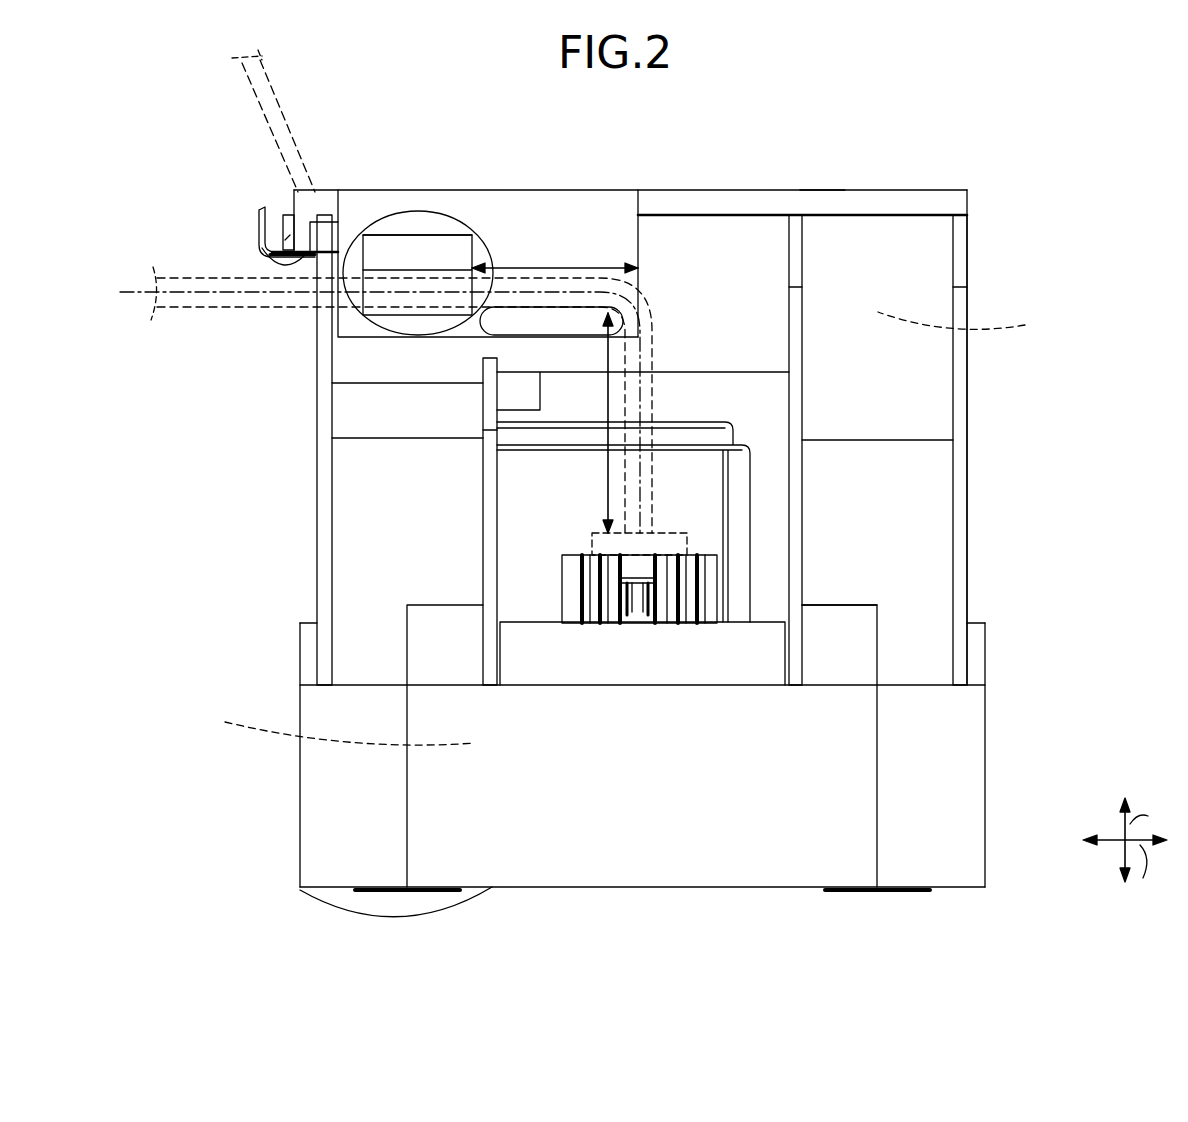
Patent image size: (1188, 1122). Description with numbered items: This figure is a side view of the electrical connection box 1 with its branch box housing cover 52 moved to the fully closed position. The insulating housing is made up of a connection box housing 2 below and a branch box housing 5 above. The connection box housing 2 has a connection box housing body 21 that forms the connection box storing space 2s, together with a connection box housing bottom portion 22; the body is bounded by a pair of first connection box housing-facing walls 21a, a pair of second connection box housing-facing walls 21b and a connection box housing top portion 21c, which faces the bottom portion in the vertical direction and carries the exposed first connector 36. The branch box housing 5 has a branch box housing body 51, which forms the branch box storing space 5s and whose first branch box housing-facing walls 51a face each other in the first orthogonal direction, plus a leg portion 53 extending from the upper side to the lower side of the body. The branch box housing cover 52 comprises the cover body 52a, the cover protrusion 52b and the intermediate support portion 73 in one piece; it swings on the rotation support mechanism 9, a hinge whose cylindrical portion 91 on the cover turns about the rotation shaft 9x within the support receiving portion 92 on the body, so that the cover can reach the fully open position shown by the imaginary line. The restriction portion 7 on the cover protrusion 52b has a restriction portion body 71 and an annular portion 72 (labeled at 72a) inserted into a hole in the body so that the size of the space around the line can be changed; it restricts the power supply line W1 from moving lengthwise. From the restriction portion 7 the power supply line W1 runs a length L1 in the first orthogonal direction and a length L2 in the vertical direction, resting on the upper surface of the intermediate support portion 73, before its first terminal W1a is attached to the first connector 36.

The electrical connection box 1 is at (968, 125).
The connection box housing 2 is at (135, 795).
The connection box storing space 2s is at (335, 728).
The branch box housing 5 is at (1108, 195).
The branch box storing space 5s is at (964, 326).
The restriction portion 7 is at (505, 128).
The rotation support mechanism 9 is at (148, 160).
The rotation shaft 9x is at (263, 262).
The connection box housing body 21 is at (452, 800).
The first connection box housing-facing walls 21a is at (300, 780).
The second connection box housing-facing walls 21b is at (727, 862).
The connection box housing top portion 21c is at (768, 620).
The connection box housing bottom portion 22 is at (300, 890).
The first connector 36 is at (572, 593).
The branch box housing body 51 is at (920, 267).
The first branch box housing-facing walls 51a is at (740, 245).
The branch box housing cover 52 is at (928, 200).
The cover body 52a is at (276, 88).
The cover protrusion 52b is at (603, 217).
The leg portion 53 is at (365, 490).
The restriction portion body 71 is at (487, 250).
The annular portion 72 is at (413, 290).
The holding block upper face 72a is at (388, 235).
The intermediate support portion 73 is at (572, 323).
The cylindrical portion 91 is at (283, 222).
The support receiving portion 92 is at (258, 232).
The length of power supply line in first orthogonal direction L1 is at (562, 260).
The length of power supply line in vertical direction L2 is at (612, 347).
The power supply line W1 is at (215, 310).
The first terminal W1a is at (592, 538).